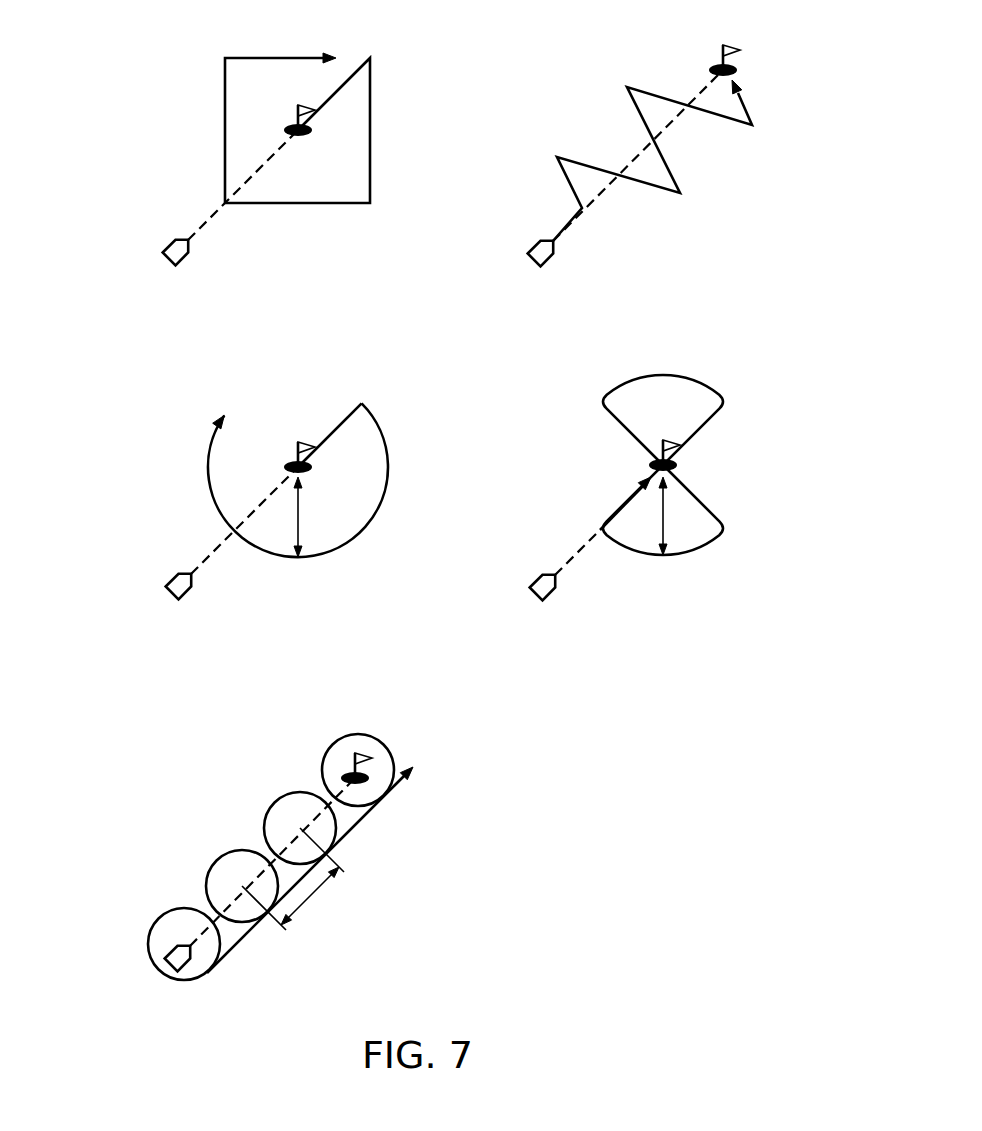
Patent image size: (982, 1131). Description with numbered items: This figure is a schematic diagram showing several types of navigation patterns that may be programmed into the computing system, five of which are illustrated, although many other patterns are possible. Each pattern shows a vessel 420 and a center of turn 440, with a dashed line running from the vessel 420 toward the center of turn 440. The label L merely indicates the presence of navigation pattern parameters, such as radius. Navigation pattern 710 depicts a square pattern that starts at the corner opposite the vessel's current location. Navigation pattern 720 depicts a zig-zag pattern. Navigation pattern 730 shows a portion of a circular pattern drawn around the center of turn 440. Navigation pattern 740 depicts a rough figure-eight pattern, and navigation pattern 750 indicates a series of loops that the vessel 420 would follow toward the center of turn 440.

The vessel 420 is at (171, 243).
The center of turn 440 is at (299, 138).
The navigation pattern 710 is at (225, 73).
The navigation pattern 720 is at (631, 84).
The navigation pattern 730 is at (207, 455).
The navigation pattern 740 is at (638, 375).
The navigation pattern 750 is at (362, 734).